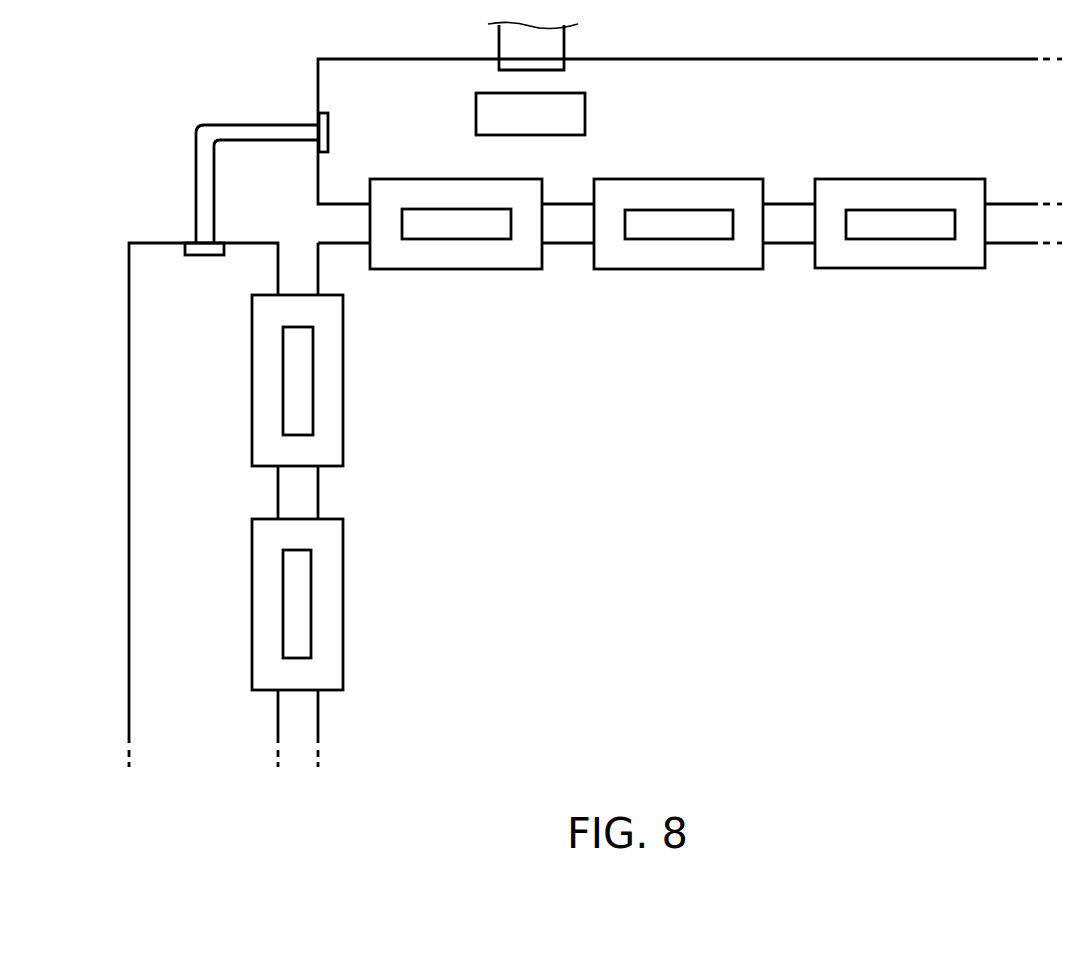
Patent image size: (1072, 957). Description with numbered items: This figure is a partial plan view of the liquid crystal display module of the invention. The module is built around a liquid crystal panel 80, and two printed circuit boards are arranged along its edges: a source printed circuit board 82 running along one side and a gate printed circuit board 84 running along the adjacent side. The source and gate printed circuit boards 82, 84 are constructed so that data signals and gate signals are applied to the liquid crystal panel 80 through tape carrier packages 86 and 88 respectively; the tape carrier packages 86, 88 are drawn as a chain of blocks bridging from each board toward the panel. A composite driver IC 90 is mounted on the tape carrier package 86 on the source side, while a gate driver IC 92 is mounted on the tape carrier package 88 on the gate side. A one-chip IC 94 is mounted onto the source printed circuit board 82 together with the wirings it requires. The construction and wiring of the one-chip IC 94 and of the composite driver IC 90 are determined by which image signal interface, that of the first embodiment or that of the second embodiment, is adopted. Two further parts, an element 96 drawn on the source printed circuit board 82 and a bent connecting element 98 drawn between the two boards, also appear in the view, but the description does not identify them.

The liquid crystal panel 80 is at (722, 488).
The source printed circuit board 82 is at (854, 59).
The gate printed circuit board 84 is at (128, 490).
The tape carrier package 86 is at (903, 268).
The tape carrier package 88 is at (343, 379).
The composite driver IC 90 is at (677, 240).
The gate driver IC 92 is at (311, 602).
The one-chip IC 94 is at (577, 92).
The coupling element 96 is at (508, 41).
The bent connecting line 98 is at (263, 127).